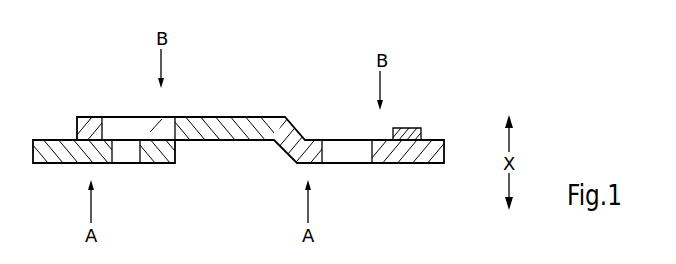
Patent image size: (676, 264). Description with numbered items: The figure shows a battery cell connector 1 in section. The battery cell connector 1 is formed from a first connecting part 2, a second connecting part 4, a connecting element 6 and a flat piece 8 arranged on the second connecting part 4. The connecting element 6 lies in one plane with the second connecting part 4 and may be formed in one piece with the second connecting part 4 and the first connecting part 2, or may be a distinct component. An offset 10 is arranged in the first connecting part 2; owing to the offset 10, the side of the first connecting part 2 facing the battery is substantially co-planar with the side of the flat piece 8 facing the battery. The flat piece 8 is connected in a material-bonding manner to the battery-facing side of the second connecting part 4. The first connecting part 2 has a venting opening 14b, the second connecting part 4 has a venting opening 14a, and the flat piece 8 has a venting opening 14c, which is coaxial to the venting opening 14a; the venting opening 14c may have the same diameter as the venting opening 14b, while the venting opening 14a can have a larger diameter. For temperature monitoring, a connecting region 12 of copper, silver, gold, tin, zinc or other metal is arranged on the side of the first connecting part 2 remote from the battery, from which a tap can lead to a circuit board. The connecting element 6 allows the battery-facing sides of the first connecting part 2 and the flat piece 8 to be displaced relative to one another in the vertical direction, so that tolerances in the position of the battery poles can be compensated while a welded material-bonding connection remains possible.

The battery cell connector 1 is at (277, 62).
The first connecting part 2 is at (403, 155).
The second connecting part 4 is at (88, 117).
The connecting element 6 is at (234, 122).
The flat piece 8 is at (55, 155).
The offset 10 is at (290, 127).
The connecting region 12 is at (408, 128).
The venting opening 14a is at (128, 117).
The venting opening 14b is at (352, 157).
The venting opening 14c is at (128, 153).